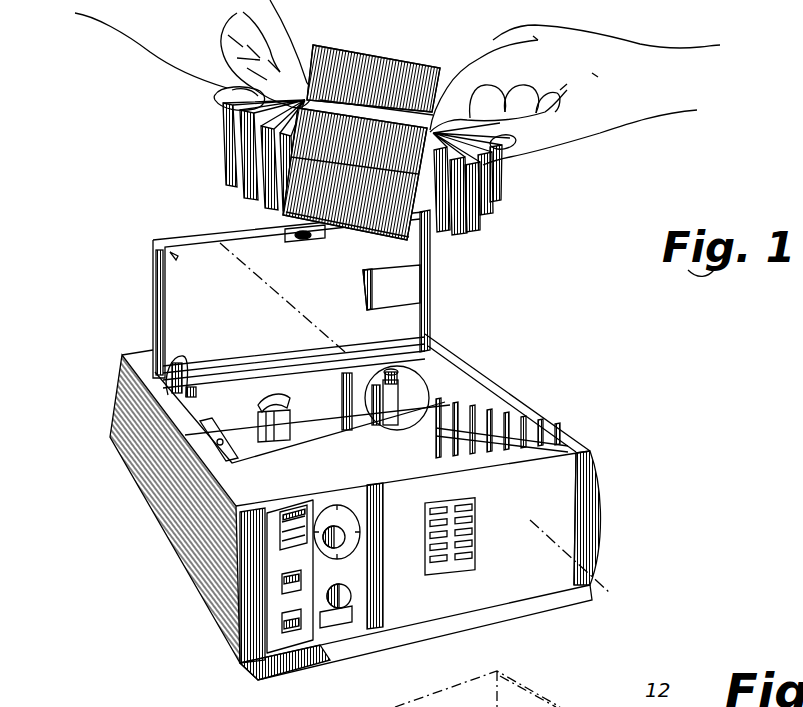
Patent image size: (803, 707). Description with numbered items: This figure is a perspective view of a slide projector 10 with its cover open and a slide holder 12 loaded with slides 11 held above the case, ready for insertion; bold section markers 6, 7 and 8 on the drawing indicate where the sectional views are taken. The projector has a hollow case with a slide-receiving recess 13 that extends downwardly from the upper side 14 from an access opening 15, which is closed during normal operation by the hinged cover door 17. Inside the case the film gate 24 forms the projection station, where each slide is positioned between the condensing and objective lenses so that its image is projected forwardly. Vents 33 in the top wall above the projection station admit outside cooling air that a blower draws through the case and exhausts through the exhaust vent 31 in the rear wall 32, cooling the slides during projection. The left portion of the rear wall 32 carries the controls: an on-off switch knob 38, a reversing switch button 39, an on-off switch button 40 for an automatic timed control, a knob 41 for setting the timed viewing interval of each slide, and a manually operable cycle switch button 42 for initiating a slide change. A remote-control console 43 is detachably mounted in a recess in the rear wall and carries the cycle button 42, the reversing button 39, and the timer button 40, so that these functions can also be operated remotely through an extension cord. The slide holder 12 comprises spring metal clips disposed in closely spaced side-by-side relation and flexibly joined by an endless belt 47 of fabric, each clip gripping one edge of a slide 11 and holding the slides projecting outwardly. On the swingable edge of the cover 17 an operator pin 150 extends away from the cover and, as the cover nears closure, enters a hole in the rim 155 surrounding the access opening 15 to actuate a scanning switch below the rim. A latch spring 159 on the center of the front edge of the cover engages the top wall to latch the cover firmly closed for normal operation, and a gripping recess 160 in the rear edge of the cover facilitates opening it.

The slide projector 10 is at (389, 516).
The slides 11 is at (250, 193).
The slide holder 12 is at (374, 127).
The slide-receiving recess 13 is at (317, 301).
The upper side 14 is at (238, 491).
The access opening 15 is at (442, 390).
The hinged cover door 17 is at (424, 279).
The film gate 24 is at (418, 380).
The exhaust vent 31 is at (468, 562).
The rear wall 32 is at (588, 529).
The vents 33 is at (367, 298).
The on-off switch knob 38 is at (349, 598).
The reversing switch button 39 is at (287, 581).
The on-off switch button 40 is at (258, 665).
The knob 41 is at (347, 530).
The cycle switch button 42 is at (295, 512).
The remote-control console 43 is at (267, 581).
The endless belt 47 is at (355, 105).
The operator pin 150 is at (172, 255).
The rim 155 is at (230, 440).
The latch spring 159 is at (291, 249).
The gripping recess 160 is at (282, 243).
The section line 6- 6 is at (125, 442).
The section line 7- 7 is at (183, 212).
The section line 8- 8 is at (176, 427).